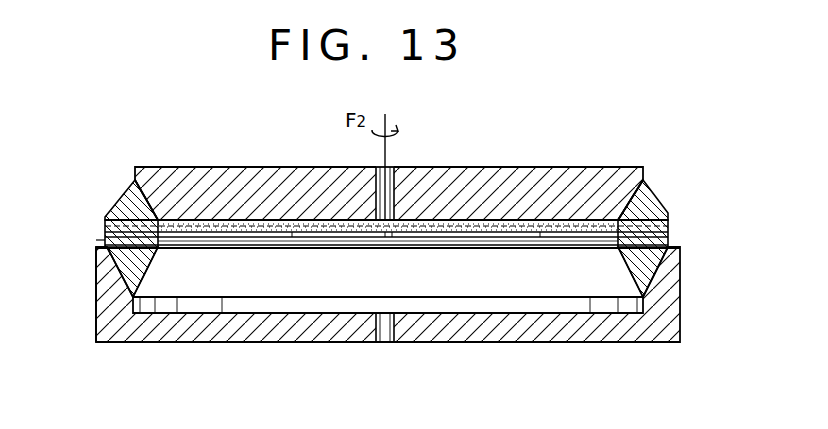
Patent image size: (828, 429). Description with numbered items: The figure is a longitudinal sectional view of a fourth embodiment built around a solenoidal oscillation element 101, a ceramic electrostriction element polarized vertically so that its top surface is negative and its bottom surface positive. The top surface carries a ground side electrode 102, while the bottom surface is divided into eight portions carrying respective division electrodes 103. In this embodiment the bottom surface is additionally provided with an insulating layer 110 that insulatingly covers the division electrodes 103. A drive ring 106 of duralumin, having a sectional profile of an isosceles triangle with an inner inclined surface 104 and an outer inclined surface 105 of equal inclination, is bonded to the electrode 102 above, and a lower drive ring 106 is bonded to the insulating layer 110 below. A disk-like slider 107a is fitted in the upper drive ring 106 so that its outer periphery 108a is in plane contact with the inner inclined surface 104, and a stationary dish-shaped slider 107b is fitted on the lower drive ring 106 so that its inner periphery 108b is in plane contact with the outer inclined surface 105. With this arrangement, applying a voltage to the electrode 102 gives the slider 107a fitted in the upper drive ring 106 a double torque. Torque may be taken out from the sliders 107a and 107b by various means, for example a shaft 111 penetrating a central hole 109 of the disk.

The solenoidal oscillation element 101 is at (103, 234).
The ground side electrode 102 is at (531, 342).
The division electrodes 103 is at (215, 240).
The inner inclined surface 104 is at (138, 192).
The outer inclined surface 105 is at (619, 280).
The drive ring 106 is at (112, 197).
The disk-like slider 107a is at (285, 177).
The dish-shaped slider 107b is at (312, 327).
The outer periphery 108a is at (160, 198).
The inner periphery 108b is at (612, 300).
The central hole 109 is at (396, 190).
The insulating layer 110 is at (97, 285).
The shaft 111 is at (387, 123).